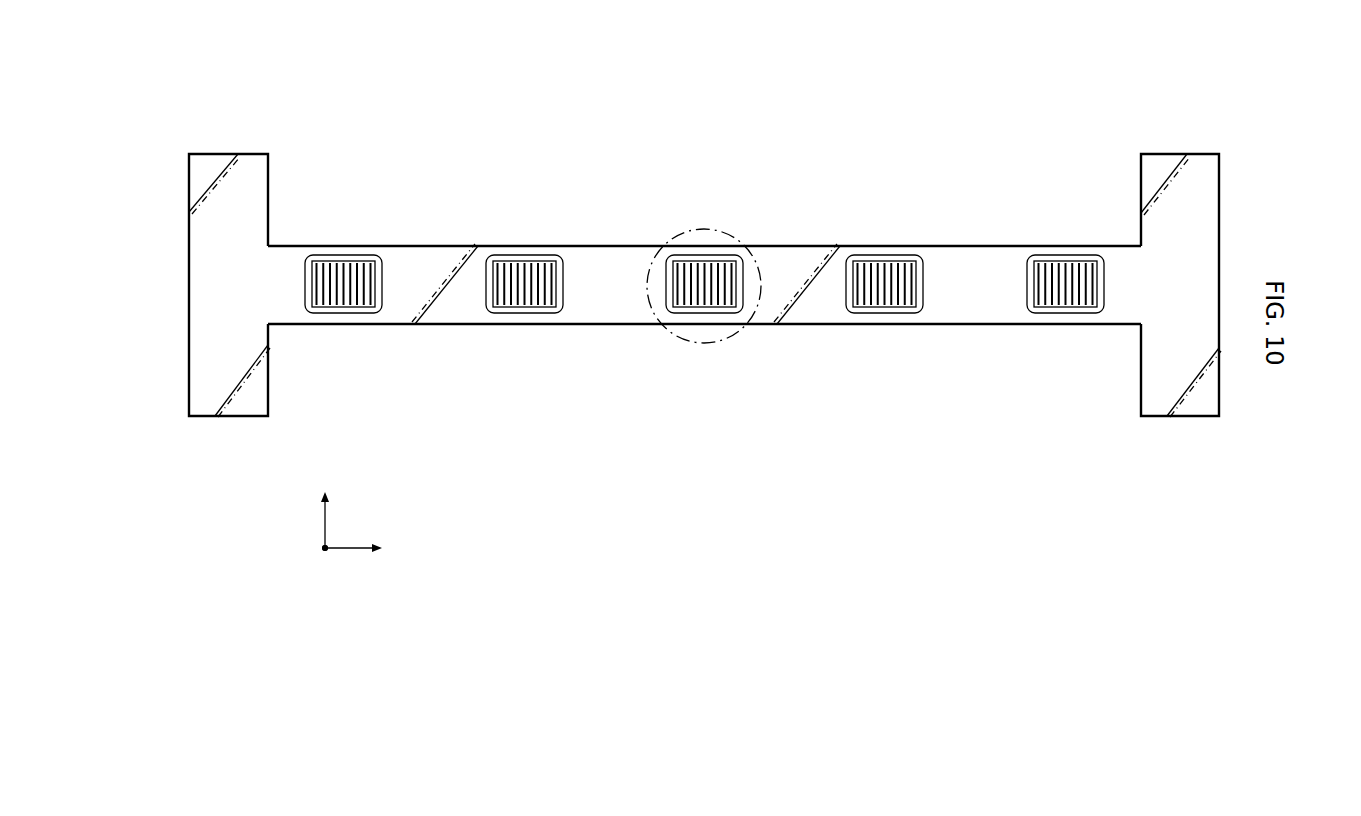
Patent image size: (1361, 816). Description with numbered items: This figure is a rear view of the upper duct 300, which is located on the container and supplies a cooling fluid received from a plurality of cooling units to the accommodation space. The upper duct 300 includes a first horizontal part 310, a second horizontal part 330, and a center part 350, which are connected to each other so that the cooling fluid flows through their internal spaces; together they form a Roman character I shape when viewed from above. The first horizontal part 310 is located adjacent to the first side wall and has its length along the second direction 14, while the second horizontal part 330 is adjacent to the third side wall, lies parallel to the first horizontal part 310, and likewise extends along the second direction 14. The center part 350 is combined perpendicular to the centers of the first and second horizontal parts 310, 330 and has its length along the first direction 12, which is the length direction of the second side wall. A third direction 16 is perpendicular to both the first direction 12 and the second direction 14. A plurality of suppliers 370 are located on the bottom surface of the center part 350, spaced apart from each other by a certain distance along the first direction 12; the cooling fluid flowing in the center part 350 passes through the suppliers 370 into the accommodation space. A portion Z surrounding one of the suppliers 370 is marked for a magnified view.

The upper duct 300 is at (368, 68).
The first horizontal part 310 is at (1172, 158).
The second horizontal part 330 is at (218, 158).
The center part 350 is at (610, 252).
The suppliers 370 is at (532, 315).
The portion Z is at (699, 228).
The first direction 12 is at (371, 548).
The second direction 14 is at (325, 504).
The third direction 16 is at (322, 553).